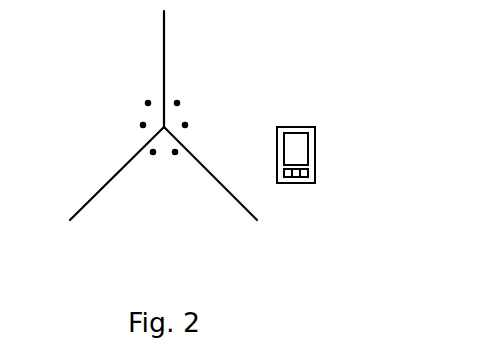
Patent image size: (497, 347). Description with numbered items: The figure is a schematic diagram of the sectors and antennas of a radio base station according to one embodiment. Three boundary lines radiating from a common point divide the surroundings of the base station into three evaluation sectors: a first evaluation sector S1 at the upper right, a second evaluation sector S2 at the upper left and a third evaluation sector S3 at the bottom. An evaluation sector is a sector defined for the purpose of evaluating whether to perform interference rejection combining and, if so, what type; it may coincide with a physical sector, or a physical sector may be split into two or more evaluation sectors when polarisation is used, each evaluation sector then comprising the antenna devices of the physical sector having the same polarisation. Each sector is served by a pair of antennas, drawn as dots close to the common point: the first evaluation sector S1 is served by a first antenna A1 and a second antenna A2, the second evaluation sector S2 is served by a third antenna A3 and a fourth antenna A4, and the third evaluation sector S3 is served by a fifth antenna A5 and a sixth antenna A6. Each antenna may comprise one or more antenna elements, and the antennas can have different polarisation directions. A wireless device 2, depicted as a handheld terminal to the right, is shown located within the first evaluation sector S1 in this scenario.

The wireless device 2 is at (315, 143).
The first evaluation sector S1 is at (257, 56).
The second evaluation sector S2 is at (112, 56).
The third evaluation sector S3 is at (177, 275).
The first antenna A1 is at (177, 103).
The second antenna A2 is at (185, 125).
The third antenna A3 is at (147, 103).
The fourth antenna A4 is at (143, 125).
The fifth antenna A5 is at (153, 152).
The sixth antenna A6 is at (175, 152).